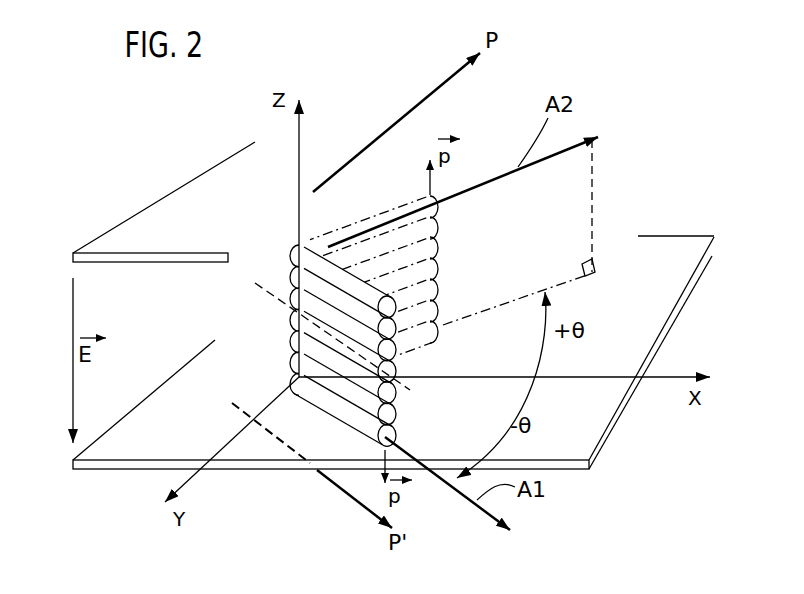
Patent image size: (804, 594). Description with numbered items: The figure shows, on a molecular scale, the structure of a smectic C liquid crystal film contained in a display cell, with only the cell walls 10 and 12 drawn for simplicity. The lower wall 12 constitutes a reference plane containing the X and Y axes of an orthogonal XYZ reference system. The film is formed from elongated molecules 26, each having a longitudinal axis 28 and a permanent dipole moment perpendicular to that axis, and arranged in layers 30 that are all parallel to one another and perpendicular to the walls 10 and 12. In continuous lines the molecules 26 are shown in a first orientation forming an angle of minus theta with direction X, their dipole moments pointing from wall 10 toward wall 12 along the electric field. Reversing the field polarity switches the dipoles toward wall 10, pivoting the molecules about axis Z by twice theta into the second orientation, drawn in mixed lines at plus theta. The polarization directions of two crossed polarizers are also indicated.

The cell wall 10 is at (115, 228).
The lower cell wall 12 is at (122, 448).
The elongated molecules 26 is at (397, 400).
The longitudinal axis 28 is at (272, 297).
The layers 30 is at (358, 220).